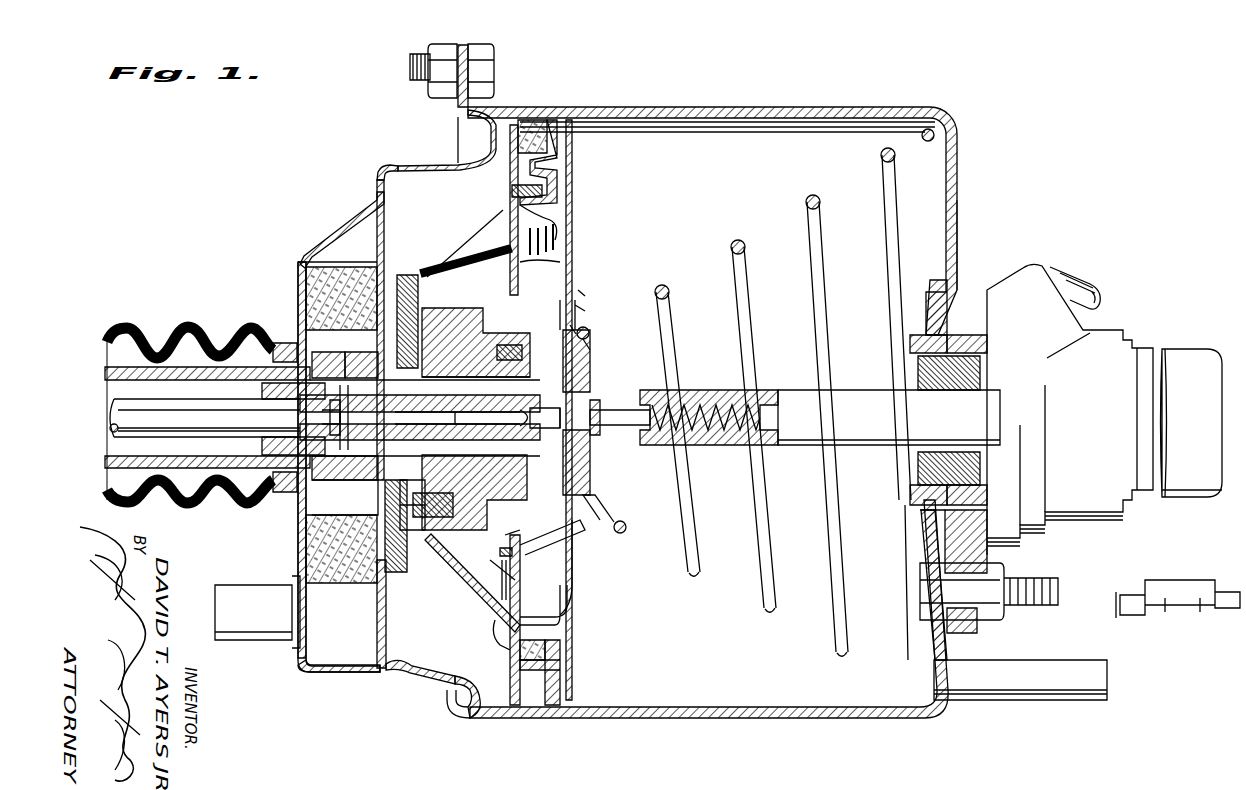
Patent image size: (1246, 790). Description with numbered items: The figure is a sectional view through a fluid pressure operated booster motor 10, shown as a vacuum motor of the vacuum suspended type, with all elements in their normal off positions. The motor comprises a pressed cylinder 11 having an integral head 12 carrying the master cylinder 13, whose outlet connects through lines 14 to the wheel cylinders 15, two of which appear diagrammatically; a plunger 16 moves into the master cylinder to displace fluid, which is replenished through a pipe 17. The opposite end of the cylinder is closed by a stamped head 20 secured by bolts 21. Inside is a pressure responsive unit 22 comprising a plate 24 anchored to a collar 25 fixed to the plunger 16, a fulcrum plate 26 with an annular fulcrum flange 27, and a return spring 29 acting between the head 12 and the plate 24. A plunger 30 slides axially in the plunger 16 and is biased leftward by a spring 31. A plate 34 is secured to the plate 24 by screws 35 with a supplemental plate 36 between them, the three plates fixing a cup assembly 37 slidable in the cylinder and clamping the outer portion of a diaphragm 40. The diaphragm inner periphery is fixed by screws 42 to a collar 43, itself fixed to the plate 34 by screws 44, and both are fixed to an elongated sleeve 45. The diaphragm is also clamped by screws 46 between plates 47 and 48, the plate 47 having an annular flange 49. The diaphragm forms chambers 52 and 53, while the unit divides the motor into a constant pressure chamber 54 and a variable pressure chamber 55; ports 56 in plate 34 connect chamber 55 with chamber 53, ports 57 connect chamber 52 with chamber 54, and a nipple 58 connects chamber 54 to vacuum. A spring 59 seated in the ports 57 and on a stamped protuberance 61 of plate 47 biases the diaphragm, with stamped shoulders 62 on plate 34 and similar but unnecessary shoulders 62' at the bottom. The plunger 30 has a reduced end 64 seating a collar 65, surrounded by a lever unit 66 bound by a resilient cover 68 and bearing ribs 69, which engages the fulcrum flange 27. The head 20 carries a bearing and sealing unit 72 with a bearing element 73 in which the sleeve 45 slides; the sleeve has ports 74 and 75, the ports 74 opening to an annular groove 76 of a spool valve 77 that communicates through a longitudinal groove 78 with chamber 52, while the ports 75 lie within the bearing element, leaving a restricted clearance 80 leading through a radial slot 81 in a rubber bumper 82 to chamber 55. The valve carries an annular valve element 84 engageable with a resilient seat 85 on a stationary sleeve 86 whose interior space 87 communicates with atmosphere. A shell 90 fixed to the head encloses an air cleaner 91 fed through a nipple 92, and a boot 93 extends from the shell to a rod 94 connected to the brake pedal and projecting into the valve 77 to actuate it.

The booster motor 10 is at (823, 88).
The pressed cylinder 11 is at (767, 108).
The integral head 12 is at (956, 162).
The master cylinder 13 is at (1100, 333).
The lines 14 is at (1185, 580).
The wheel cylinders 15 is at (1172, 617).
The plunger 16 is at (850, 390).
The pipe 17 is at (1085, 270).
The stamped head 20 is at (490, 140).
The bolts 21 is at (440, 48).
The pressure responsive unit 22 is at (575, 180).
The plate 24 is at (585, 285).
The collar 25 is at (598, 360).
The fulcrum plate 26 is at (600, 485).
The annular fulcrum flange 27 is at (600, 322).
The return spring 29 is at (814, 196).
The plunger 30 is at (636, 408).
The spring 31 is at (722, 390).
The plate 34 is at (510, 160).
The screws 35 is at (545, 192).
The supplemental plate 36 is at (560, 158).
The cup assembly 37 is at (535, 120).
The pressure responsive diaphragm 40 is at (570, 622).
The screws 42 is at (505, 344).
The collar 43 is at (465, 303).
The screws 44 is at (444, 536).
The sleeve 45 is at (104, 372).
The screws 46 is at (500, 552).
The plate 47 is at (510, 577).
The plate 48 is at (504, 537).
The annular flange 49 is at (545, 548).
The diaphragm chamber 52 is at (575, 586).
The diaphragm chamber 53 is at (465, 287).
The constant pressure chamber 54 is at (730, 166).
The variable pressure chamber 55 is at (400, 164).
The ports 56 is at (462, 262).
The ports 57 is at (565, 262).
The nipple 58 is at (1108, 683).
The spring 59 is at (558, 222).
The stamped protuberance 61 is at (560, 243).
The shoulders 62 is at (465, 242).
The shoulders 62' is at (495, 572).
The reduced left-hand end 64 is at (544, 417).
The collar 65 is at (580, 415).
The lever unit 66 is at (585, 311).
The resilient cover 68 is at (585, 296).
The rib 69 is at (569, 422).
The bearing and sealing unit 72 is at (325, 352).
The bearing element 73 is at (365, 352).
The ports 74 is at (360, 417).
The ports 75 is at (360, 487).
The annular groove 76 is at (420, 417).
The spool valve 77 is at (425, 415).
The longitudinal valve groove 78 is at (473, 416).
The restricted clearance 80 is at (350, 480).
The radial slot 81 is at (392, 262).
The bumper 82 is at (406, 274).
The annular valve element 84 is at (344, 417).
The resilient seat 85 is at (326, 414).
The sleeve 86 is at (262, 391).
The space 87 is at (262, 444).
The shell 90 is at (350, 225).
The air cleaner 91 is at (312, 255).
The nipple 92 is at (228, 590).
The boot 93 is at (185, 322).
The rod 94 is at (108, 418).